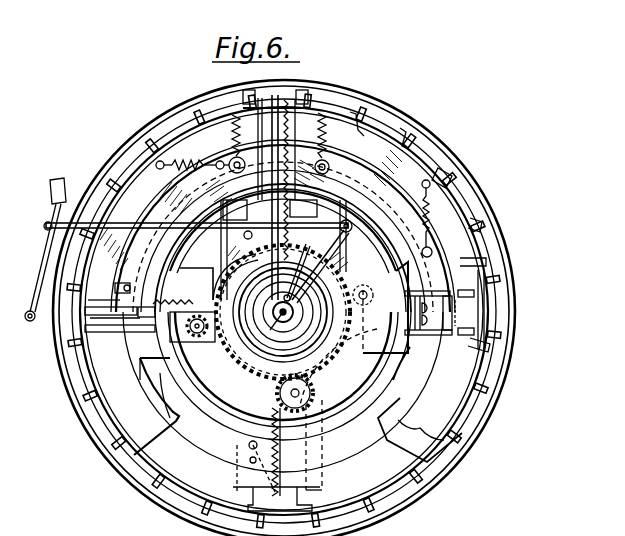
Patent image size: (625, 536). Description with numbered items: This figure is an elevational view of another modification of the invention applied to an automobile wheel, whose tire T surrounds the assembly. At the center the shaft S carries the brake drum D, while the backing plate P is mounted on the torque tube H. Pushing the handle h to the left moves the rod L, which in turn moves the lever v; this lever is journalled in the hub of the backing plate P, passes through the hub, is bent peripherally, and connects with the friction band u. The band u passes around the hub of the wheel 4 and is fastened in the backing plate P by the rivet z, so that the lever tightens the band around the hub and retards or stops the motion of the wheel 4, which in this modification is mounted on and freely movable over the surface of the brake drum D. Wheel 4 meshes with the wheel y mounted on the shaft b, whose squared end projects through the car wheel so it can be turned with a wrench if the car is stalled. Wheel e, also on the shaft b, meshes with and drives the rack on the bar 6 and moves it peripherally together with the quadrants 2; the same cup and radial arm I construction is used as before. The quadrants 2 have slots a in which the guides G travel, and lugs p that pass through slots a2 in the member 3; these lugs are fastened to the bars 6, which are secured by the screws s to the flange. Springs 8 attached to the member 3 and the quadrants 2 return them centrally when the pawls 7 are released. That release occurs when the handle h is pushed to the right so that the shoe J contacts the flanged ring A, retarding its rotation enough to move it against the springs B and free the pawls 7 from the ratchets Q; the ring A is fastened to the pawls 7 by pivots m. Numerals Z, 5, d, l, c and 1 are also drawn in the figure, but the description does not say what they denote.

The outer rim Z is at (262, 118).
The ratchets Q is at (312, 104).
The member 3 is at (185, 143).
The bar 6 is at (305, 95).
The rivet z is at (160, 185).
The sector 5 is at (375, 272).
The screws s is at (283, 194).
The central shaft d is at (250, 110).
The pawls 7 is at (338, 110).
The pivots m is at (337, 143).
The springs 8 is at (380, 180).
The flanged ring A is at (382, 182).
The springs B is at (437, 207).
The spring l is at (396, 229).
The stop c is at (473, 225).
The radial arm I is at (488, 228).
The guides G is at (500, 258).
The shoe J is at (420, 316).
The slots a is at (462, 346).
The rod L is at (198, 213).
The handle h is at (47, 238).
The brake drum D is at (320, 266).
The lever v is at (300, 266).
The backing plate P is at (219, 265).
The shaft S is at (267, 319).
The torque tube H is at (260, 350).
The friction band u is at (283, 312).
The wheel 4 is at (359, 316).
The wheel y is at (280, 395).
The wheel e is at (190, 330).
The slots a2 is at (108, 318).
The tire T is at (66, 396).
The quadrants 2 is at (127, 429).
The plate 1 is at (375, 511).
The lugs p is at (273, 456).
The shaft b is at (418, 453).